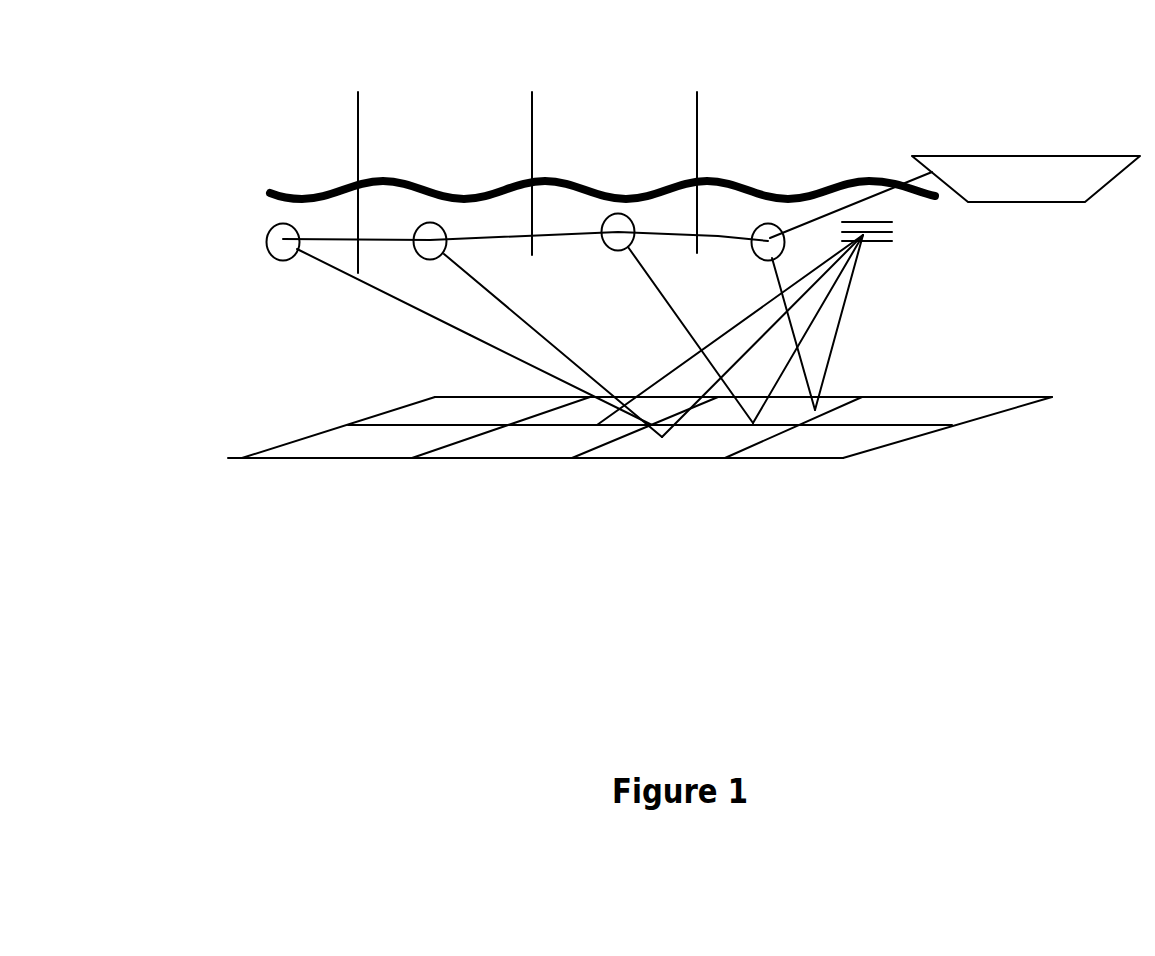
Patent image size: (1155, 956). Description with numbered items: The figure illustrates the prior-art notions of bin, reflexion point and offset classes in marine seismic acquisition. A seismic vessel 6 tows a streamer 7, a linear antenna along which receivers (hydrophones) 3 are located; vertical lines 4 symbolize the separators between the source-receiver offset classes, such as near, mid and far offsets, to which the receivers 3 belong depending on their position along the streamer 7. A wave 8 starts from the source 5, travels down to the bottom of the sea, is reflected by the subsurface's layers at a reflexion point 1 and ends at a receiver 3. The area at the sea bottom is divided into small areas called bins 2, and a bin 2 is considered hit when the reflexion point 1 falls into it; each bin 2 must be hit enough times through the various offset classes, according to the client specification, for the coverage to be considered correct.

The reflexion point 1 is at (603, 418).
The bin 2 is at (826, 442).
The receiver (hydrophone) 3 is at (256, 259).
The vertical line 4 is at (542, 134).
The source 5 is at (872, 251).
The seismic vessel 6 is at (1005, 144).
The streamer (linear antenna) 7 is at (727, 226).
The reflected wave 8 is at (384, 306).